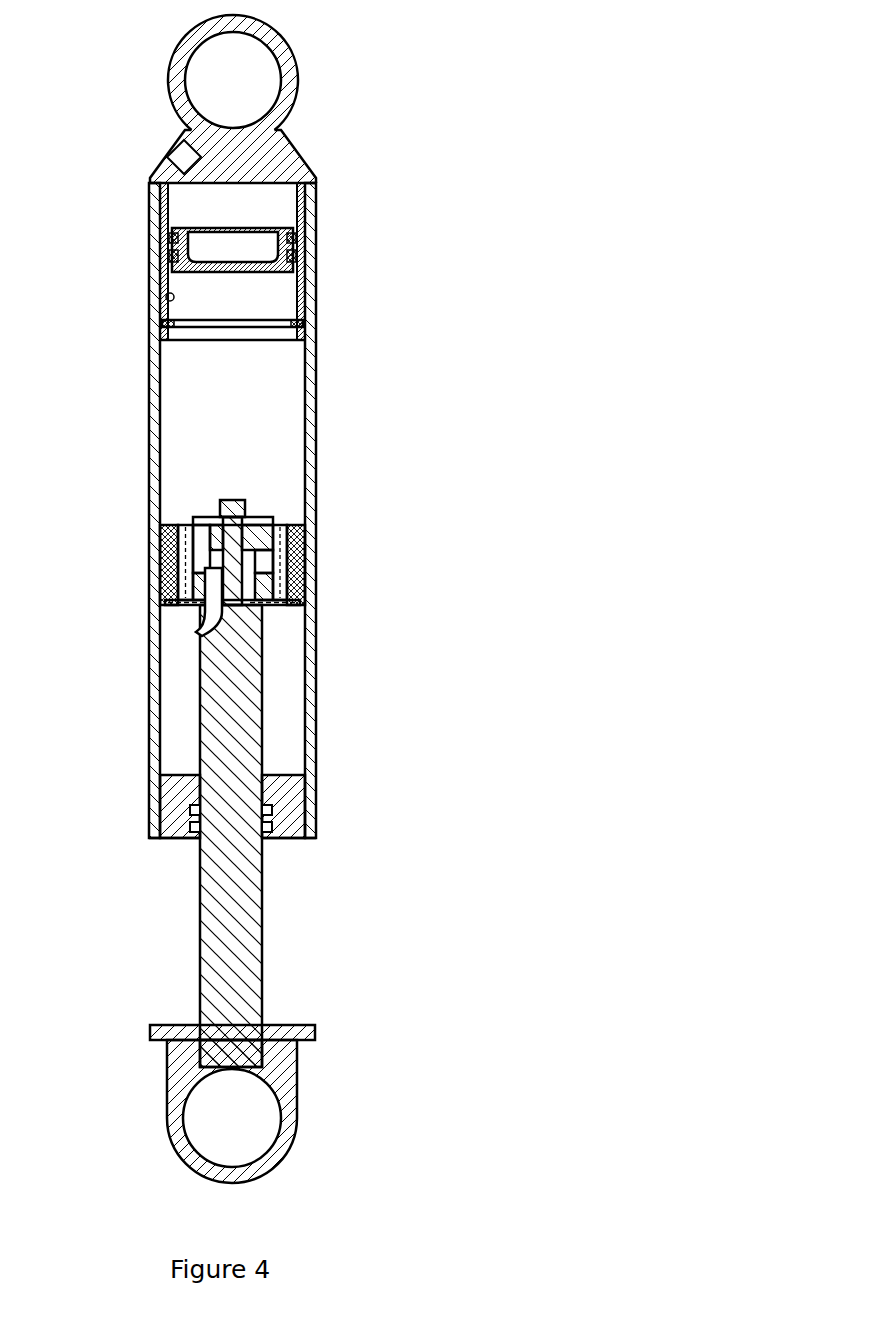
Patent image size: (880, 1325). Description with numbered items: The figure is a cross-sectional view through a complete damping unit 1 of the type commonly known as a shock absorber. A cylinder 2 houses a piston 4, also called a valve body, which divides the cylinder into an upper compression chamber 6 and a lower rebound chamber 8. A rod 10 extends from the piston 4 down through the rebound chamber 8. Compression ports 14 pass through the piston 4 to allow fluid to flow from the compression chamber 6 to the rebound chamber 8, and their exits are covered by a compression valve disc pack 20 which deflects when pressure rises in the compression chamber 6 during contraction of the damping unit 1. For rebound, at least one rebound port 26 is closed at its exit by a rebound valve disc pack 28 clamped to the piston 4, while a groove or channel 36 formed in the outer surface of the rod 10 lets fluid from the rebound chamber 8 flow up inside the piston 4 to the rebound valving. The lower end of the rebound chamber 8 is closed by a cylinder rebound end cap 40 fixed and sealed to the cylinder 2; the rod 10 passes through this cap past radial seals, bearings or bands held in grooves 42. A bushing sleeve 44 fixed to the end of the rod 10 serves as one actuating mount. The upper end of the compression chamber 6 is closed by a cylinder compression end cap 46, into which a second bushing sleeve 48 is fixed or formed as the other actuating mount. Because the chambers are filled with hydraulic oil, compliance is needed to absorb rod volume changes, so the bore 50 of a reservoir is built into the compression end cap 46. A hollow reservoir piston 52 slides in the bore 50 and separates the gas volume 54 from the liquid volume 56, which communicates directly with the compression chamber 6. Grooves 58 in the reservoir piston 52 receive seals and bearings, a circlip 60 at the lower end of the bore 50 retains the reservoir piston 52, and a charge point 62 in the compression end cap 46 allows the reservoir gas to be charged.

The damping unit 1 is at (461, 92).
The cylinder 2 is at (316, 470).
The piston 4 is at (275, 534).
The compression chamber 6 is at (262, 420).
The rebound chamber 8 is at (290, 727).
The rod 10 is at (245, 945).
The compression ports 14 is at (165, 572).
The compression valve disc pack 20 is at (298, 602).
The rebound port 26 is at (185, 530).
The rebound valve disc pack 28 is at (215, 518).
The groove or channel 36 is at (212, 620).
The cylinder rebound end cap 40 is at (308, 832).
The grooves 42 is at (197, 805).
The bushing sleeve 44 is at (285, 1090).
The cylinder compression end cap 46 is at (290, 162).
The bushing sleeve 48 is at (282, 50).
The bore 50 is at (165, 300).
The reservoir piston 52 is at (285, 256).
The gas volume 54 is at (280, 200).
The liquid volume 56 is at (272, 305).
The grooves 58 is at (170, 260).
The circlip 60 is at (165, 328).
The charge point 62 is at (172, 150).